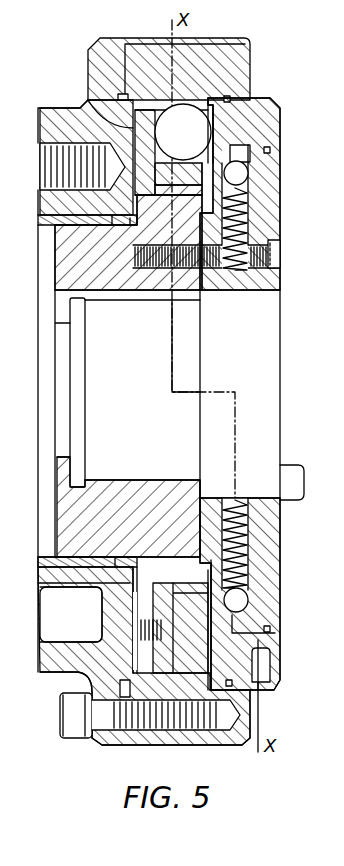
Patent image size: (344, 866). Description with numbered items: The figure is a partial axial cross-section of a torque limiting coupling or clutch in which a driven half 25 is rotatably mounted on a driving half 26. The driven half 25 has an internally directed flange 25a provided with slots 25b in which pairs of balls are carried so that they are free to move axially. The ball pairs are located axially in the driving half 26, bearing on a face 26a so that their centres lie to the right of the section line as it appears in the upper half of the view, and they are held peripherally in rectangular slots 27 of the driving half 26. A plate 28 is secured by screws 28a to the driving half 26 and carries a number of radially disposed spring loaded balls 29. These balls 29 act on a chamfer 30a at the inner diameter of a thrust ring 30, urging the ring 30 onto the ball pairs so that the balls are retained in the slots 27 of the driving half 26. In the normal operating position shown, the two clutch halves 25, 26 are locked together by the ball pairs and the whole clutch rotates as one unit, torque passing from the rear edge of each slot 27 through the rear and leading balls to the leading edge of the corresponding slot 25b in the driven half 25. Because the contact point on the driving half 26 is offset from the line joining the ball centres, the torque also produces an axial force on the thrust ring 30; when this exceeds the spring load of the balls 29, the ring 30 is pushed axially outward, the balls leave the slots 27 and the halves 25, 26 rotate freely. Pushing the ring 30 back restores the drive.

The driven half 25 is at (103, 58).
The internally directed flange 25a is at (183, 655).
The slots 25b is at (200, 97).
The driving half 26 is at (99, 270).
The face 26a is at (88, 100).
The rectangular slots 27 is at (160, 157).
The plate 28 is at (267, 555).
The screws 28a is at (277, 257).
The spring loaded balls 29 is at (248, 173).
The thrust ring 30 is at (238, 662).
The chamfer 30a is at (241, 604).